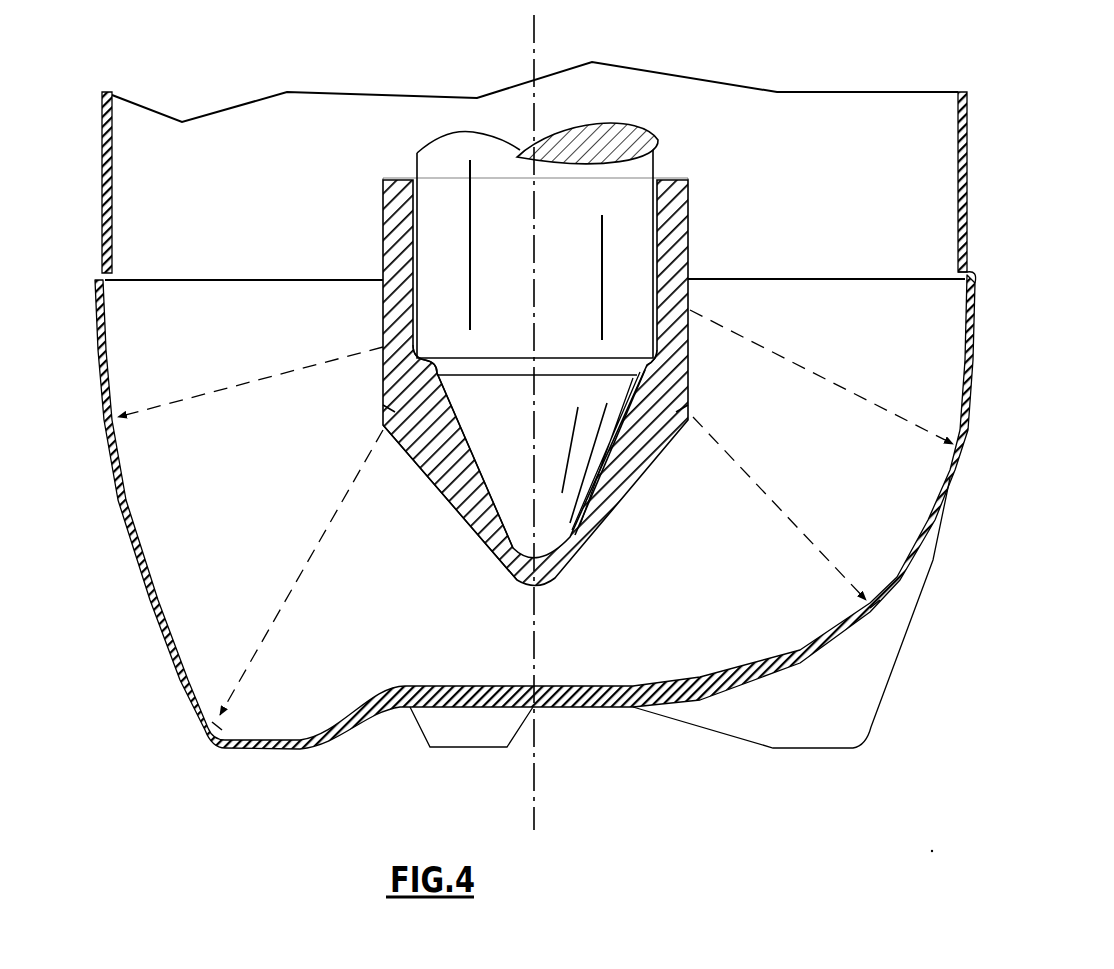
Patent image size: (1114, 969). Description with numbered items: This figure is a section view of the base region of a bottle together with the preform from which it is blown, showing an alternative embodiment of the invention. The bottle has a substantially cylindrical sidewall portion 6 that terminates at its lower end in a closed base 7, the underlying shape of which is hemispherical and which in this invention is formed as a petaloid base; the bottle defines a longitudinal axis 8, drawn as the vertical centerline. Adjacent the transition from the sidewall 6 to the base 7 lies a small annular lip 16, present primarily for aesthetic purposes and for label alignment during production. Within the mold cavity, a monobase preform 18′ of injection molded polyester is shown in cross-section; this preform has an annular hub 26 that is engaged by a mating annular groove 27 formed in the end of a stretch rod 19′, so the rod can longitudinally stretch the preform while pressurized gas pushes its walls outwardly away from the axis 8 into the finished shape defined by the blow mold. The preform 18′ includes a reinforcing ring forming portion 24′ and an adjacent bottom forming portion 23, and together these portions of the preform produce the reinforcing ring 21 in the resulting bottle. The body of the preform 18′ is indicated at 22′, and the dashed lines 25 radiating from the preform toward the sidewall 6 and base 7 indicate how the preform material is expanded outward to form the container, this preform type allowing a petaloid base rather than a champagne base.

The sidewall portion 6 is at (967, 157).
The base 7 is at (1015, 411).
The longitudinal axis 8 is at (535, 33).
The annular lip 16 is at (975, 273).
The monobase preform 18′ is at (736, 200).
The stretch rod 19′ is at (660, 160).
The reinforcing ring 21 is at (218, 718).
The nozzle body 22′ is at (678, 236).
The insert 23 is at (617, 503).
The reinforcing ring forming portion 24′ is at (400, 410).
The spray jets 25 is at (207, 398).
The annular hub 26 is at (427, 422).
The annular groove 27 is at (428, 356).